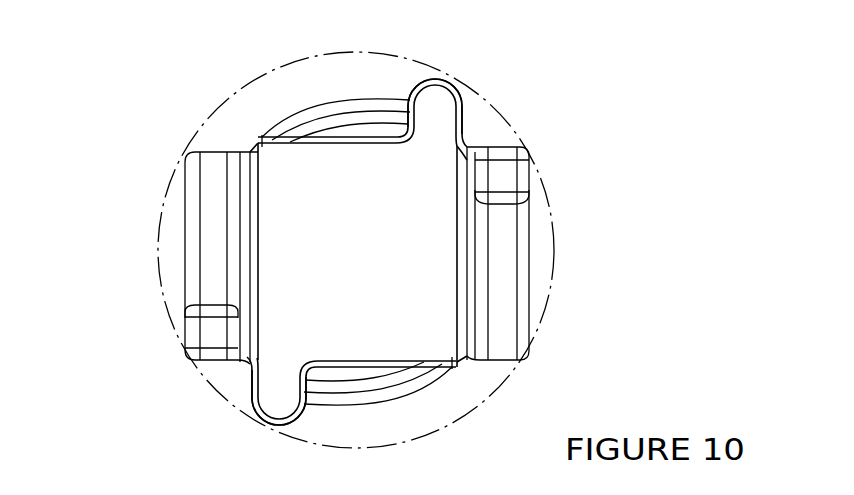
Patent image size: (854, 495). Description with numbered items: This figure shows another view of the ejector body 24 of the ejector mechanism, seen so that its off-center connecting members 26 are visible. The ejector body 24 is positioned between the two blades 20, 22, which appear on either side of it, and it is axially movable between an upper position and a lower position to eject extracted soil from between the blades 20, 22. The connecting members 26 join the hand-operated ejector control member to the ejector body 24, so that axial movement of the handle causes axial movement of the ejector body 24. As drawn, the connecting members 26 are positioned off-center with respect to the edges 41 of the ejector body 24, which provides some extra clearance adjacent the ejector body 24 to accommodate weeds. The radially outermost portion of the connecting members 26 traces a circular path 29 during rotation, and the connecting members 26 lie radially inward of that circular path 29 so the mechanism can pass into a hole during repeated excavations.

The blade 20 is at (497, 277).
The blade 22 is at (212, 228).
The ejector body 24 is at (353, 285).
The connecting members 26 is at (430, 107).
The circular path 29 is at (500, 117).
The edges 41 is at (323, 133).